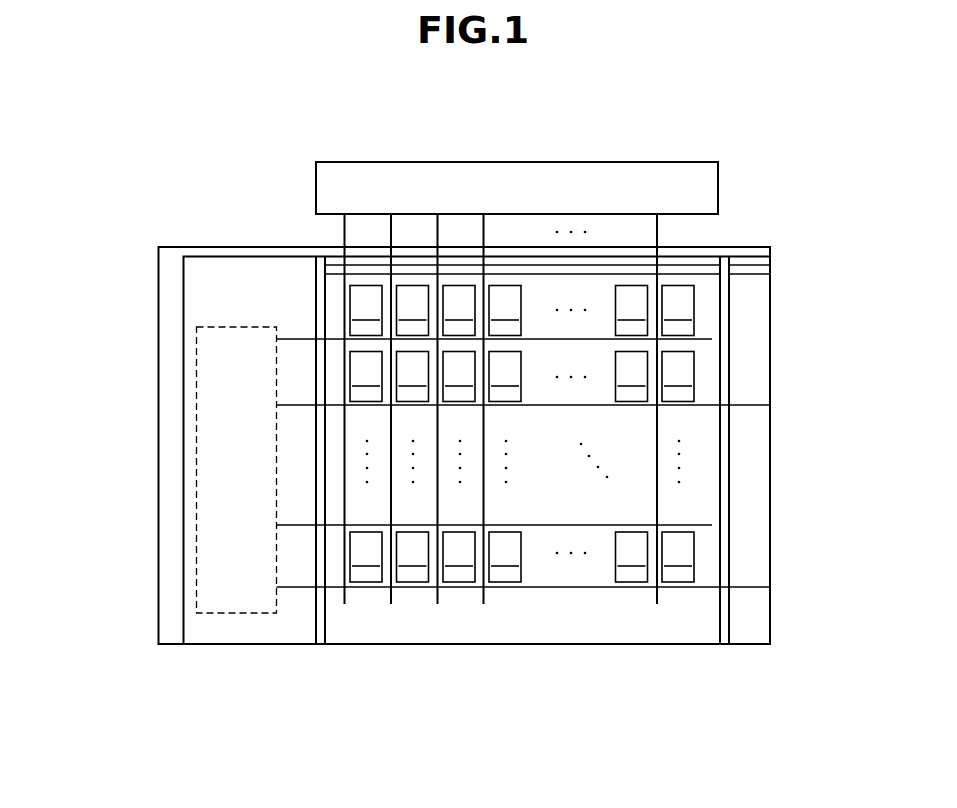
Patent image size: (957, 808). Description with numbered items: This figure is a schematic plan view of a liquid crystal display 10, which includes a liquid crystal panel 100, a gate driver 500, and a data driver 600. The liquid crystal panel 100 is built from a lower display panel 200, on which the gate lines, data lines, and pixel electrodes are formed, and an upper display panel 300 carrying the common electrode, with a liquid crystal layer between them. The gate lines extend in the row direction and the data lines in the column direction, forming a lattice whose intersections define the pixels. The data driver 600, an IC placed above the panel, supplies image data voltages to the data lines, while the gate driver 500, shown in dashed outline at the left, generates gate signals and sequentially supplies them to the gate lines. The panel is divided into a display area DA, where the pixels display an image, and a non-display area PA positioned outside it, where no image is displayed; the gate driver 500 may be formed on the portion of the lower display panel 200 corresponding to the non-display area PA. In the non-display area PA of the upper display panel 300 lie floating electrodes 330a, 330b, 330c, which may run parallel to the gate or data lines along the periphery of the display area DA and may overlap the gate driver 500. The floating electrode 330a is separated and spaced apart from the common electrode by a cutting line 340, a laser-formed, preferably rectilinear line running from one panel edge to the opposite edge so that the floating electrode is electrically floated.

The liquid crystal display 10 is at (475, 742).
The liquid crystal panel 100 is at (190, 737).
The lower display panel 200 is at (155, 630).
The upper display panel 300 is at (182, 628).
The floating electrode 330a is at (238, 272).
The floating electrode 330b is at (698, 265).
The floating electrode 330c is at (765, 307).
The cutting line 340 is at (320, 630).
The gate driver 500 is at (197, 372).
The data driver 600 is at (565, 161).
The non-display area PA is at (293, 618).
The display area DA is at (357, 618).